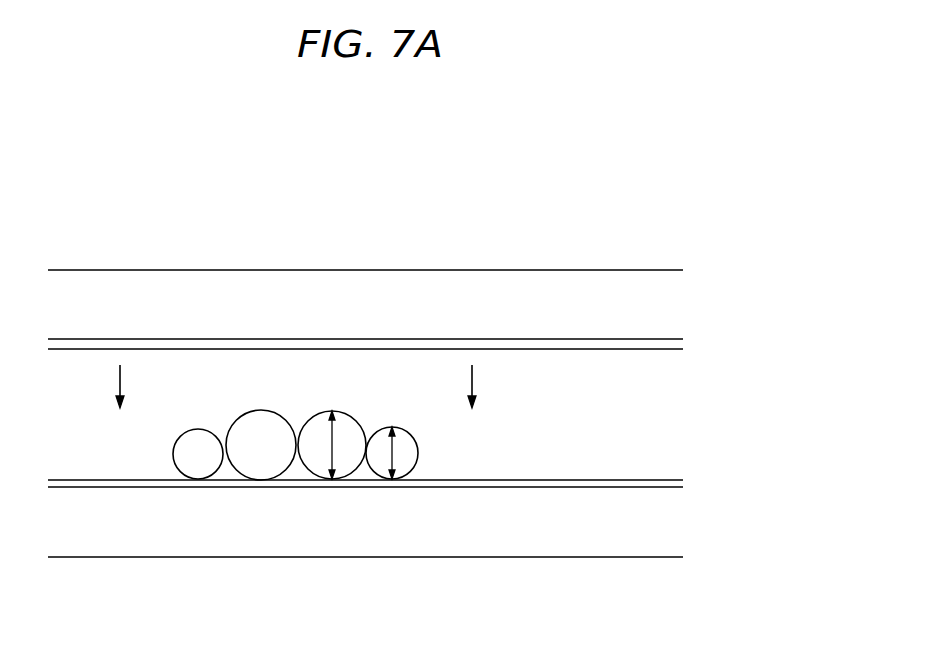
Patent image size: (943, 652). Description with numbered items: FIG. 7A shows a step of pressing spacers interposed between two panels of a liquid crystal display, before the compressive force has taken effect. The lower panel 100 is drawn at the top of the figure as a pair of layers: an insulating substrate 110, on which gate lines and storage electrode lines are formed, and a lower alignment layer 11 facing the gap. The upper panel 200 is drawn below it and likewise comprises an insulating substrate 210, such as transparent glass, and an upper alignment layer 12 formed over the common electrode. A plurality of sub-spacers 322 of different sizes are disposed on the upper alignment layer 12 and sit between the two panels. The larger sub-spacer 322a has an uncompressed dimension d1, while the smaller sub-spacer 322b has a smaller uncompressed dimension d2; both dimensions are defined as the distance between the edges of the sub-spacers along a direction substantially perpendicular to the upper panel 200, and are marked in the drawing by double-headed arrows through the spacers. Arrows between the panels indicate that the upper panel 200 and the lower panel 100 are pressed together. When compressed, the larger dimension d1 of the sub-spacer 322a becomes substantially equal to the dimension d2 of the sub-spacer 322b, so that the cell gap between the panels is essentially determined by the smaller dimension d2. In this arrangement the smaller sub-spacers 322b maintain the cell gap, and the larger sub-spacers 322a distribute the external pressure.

The lower panel 100 is at (417, 267).
The insulating substrate 110 is at (660, 308).
The lower alignment layer 11 is at (660, 346).
The upper panel 200 is at (429, 483).
The upper alignment layer 12 is at (660, 486).
The insulating substrate 210 is at (660, 524).
The sub-spacers 322 is at (278, 213).
The sub-spacer 322a is at (260, 410).
The sub-spacer 322b is at (197, 429).
The dimension d1 is at (330, 446).
The dimension d2 is at (390, 452).